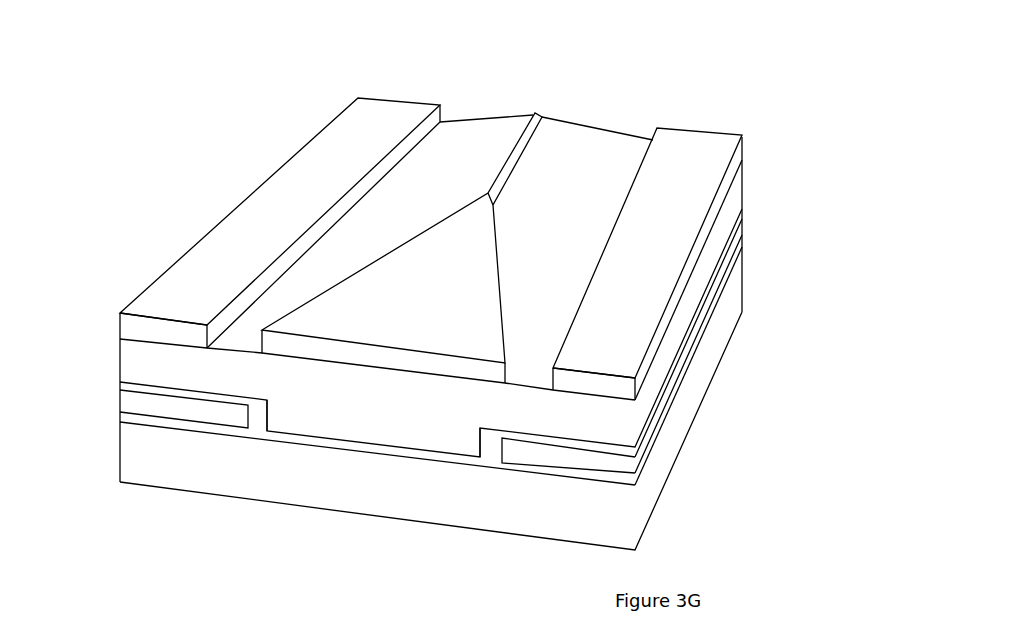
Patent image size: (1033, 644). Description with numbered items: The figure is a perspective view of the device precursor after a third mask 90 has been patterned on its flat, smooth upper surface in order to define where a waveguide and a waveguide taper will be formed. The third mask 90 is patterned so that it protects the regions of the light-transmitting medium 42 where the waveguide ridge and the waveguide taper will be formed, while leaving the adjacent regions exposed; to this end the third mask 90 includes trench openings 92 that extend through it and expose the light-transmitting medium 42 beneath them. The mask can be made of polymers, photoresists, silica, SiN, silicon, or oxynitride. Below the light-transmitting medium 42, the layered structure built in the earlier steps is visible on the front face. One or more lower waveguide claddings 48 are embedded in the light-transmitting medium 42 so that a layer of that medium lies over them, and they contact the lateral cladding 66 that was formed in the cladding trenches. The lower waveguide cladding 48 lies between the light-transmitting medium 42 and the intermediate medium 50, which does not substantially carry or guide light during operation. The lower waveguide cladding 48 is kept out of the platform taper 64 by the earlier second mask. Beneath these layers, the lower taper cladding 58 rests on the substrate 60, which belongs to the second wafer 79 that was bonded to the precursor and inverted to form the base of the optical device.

The light-transmitting medium 42 is at (353, 427).
The lower waveguide cladding 48 is at (200, 393).
The intermediate medium 50 is at (172, 410).
The lower taper cladding 58 is at (393, 455).
The substrate 60 is at (345, 492).
The platform taper 64 is at (353, 456).
The lateral cladding 66 is at (257, 412).
The second wafer 79 is at (96, 484).
The third mask 90 is at (241, 232).
The trench openings 92 is at (535, 105).